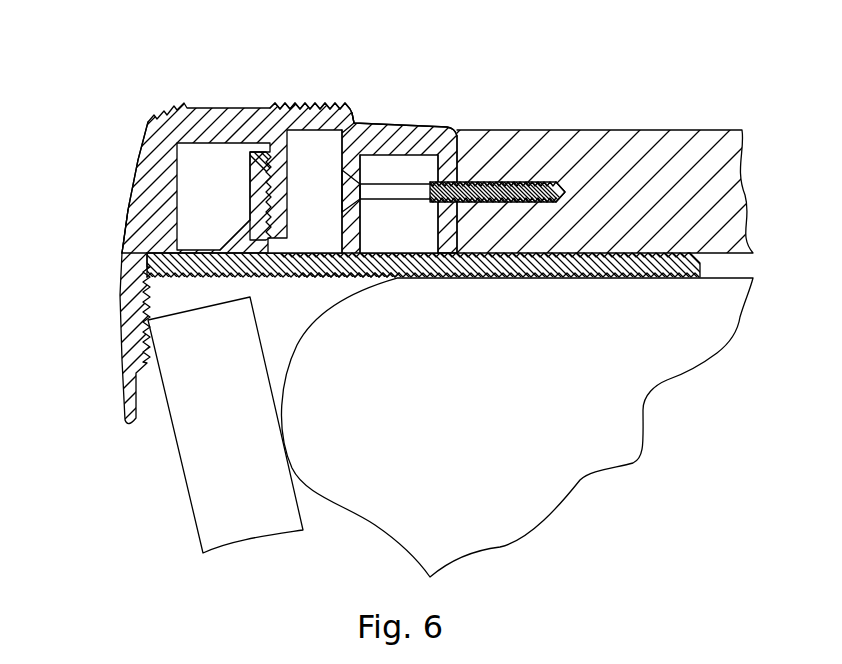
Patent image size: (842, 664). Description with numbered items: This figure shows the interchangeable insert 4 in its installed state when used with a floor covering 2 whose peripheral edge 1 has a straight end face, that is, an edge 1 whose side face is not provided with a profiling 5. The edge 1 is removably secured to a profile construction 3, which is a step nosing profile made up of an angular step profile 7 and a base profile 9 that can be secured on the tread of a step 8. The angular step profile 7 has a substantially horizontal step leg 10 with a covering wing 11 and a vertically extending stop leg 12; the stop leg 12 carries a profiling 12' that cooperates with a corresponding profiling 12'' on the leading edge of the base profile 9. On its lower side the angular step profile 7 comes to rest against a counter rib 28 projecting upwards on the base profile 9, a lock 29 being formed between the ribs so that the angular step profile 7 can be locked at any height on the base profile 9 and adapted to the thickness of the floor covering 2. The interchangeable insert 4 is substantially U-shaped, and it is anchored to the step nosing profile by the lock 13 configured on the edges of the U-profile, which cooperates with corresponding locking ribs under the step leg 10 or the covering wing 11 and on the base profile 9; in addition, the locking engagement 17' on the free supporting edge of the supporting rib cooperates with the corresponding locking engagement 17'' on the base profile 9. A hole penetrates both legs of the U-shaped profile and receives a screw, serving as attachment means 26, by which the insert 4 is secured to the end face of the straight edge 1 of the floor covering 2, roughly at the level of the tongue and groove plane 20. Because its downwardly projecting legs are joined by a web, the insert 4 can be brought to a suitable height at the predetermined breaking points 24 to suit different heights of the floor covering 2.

The edge 1 is at (489, 112).
The floor covering 2 is at (685, 125).
The profile construction 3 is at (163, 82).
The interchangeable insert 4 is at (380, 182).
The profiling 5 is at (437, 185).
The angular step profile 7 is at (132, 140).
The step 8 is at (462, 397).
The base profile 9 is at (397, 276).
The step leg 10 is at (278, 103).
The covering wing 11 is at (440, 124).
The stop leg 12 is at (89, 235).
The profiling 12' is at (104, 338).
The profiling 12'' is at (421, 276).
The lock 13 is at (353, 120).
The locking engagement 17' is at (305, 191).
The locking engagement 17'' is at (339, 303).
The tongue and groove plane 20 is at (588, 192).
The predetermined breaking points 24 is at (457, 227).
The attachment means 26 is at (540, 182).
The counter rib 28 is at (250, 170).
The lock 29 is at (250, 213).